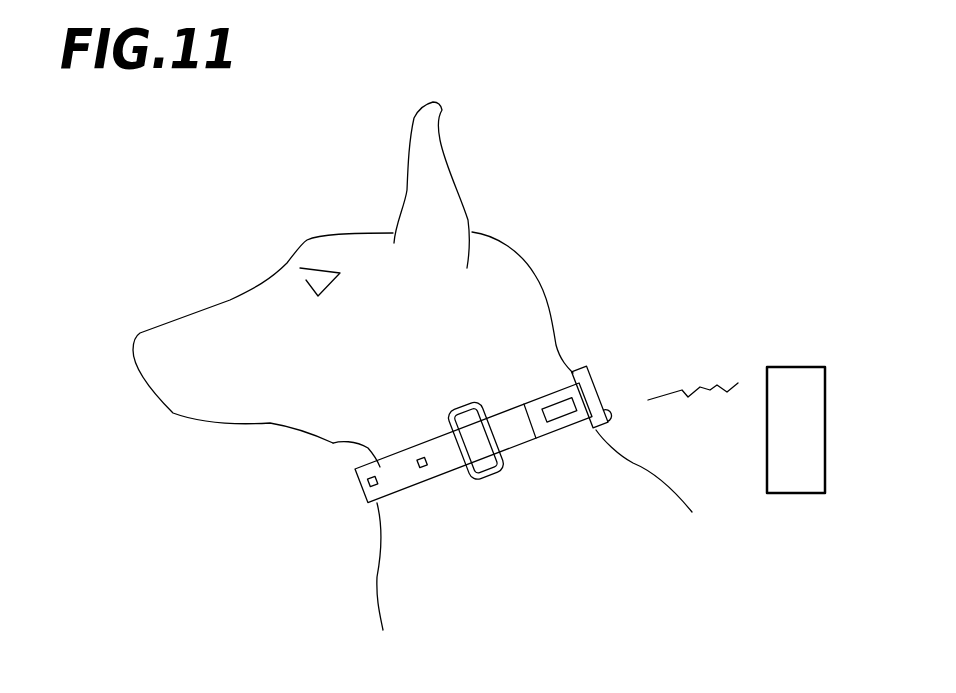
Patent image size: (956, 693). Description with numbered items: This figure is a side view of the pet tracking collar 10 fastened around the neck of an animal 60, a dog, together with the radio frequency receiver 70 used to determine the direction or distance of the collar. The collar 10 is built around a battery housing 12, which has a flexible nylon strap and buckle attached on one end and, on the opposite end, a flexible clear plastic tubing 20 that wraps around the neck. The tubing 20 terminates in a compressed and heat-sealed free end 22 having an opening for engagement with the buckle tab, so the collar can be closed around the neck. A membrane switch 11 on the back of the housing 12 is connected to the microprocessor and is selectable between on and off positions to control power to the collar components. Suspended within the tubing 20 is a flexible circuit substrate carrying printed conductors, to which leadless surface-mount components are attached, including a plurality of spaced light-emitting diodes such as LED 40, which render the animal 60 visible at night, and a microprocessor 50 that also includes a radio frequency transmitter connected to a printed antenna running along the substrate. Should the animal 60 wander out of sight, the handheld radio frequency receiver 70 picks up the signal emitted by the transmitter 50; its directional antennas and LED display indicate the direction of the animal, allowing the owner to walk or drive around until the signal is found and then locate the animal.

The pet tracking collar 10 is at (479, 441).
The membrane switch 11 is at (613, 405).
The battery housing 12 is at (598, 376).
The flexible clear plastic tubing 20 is at (333, 443).
The compressed and heat-sealed free end 22 is at (512, 417).
The LED 40 is at (423, 470).
The microprocessor 50 is at (563, 414).
The animal 60 is at (291, 213).
The radio frequency receiver 70 is at (792, 443).